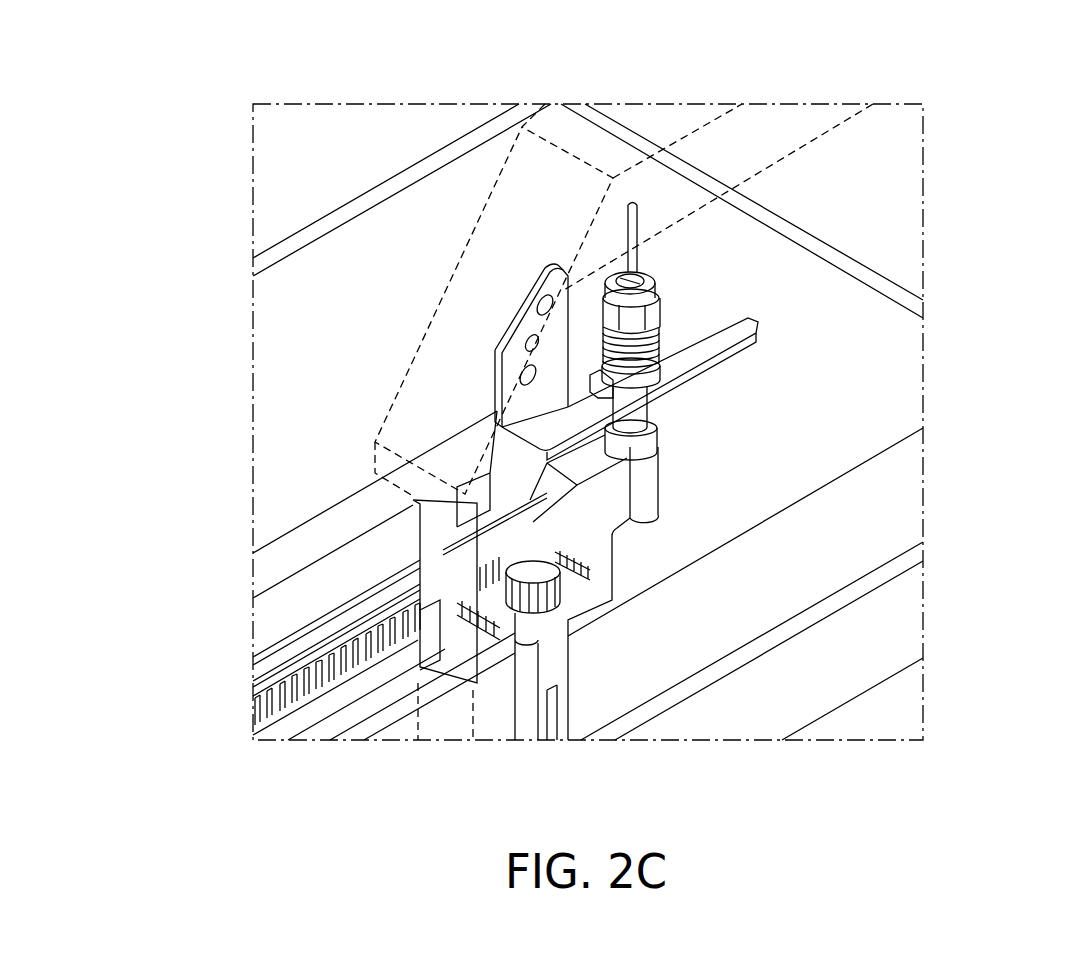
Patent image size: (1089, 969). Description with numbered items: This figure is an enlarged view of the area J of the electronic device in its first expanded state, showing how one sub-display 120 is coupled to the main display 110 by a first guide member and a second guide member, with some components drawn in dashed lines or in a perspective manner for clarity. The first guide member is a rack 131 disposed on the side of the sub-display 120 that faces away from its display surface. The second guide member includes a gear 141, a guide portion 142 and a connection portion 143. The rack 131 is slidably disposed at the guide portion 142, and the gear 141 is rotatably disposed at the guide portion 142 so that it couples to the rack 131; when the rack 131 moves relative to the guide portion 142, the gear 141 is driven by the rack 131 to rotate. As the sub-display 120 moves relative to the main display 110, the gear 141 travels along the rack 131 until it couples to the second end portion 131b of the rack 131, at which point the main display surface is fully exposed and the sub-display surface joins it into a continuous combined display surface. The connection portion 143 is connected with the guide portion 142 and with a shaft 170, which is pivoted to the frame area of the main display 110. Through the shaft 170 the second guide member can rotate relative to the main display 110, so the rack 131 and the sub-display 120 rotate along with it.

The area J is at (328, 104).
The main display 110 is at (393, 392).
The sub-display 120 is at (278, 563).
The rack 131 is at (270, 688).
The second end portion 131b is at (420, 596).
The gear 141 is at (557, 608).
The guide portion 142 is at (453, 557).
The connection portion 143 is at (620, 510).
The shaft 170 is at (638, 423).